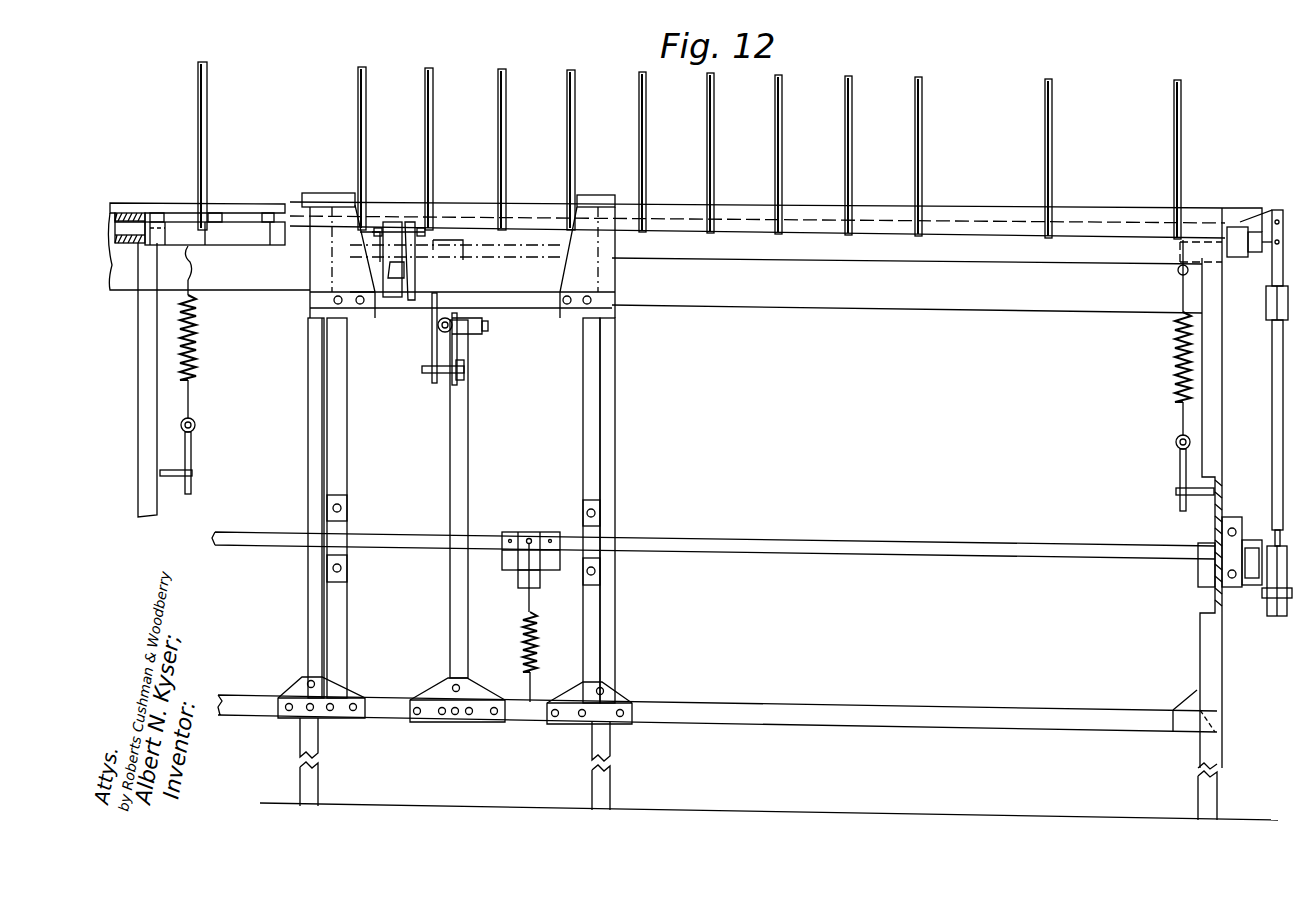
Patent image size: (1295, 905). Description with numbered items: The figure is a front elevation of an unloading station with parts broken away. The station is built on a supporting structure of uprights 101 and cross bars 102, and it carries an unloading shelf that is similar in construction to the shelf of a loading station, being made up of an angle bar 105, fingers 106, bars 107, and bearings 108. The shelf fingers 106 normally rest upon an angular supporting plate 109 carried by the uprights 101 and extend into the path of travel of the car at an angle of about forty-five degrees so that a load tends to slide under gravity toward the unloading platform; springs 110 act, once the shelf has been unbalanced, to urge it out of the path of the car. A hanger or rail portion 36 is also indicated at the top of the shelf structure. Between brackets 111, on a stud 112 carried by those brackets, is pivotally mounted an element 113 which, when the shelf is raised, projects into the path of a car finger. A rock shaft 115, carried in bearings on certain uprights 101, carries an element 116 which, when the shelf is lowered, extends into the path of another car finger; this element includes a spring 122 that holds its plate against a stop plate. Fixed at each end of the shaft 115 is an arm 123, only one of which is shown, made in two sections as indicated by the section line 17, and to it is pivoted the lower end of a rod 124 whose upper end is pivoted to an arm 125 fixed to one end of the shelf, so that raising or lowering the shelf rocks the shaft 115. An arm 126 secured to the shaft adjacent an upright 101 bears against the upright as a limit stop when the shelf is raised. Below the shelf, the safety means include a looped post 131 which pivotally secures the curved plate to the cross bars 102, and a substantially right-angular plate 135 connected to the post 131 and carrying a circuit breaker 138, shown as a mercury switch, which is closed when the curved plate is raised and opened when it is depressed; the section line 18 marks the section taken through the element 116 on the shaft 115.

The section line 17 is at (1257, 486).
The section line 18 is at (492, 498).
The rail 36 is at (527, 212).
The uprights 101 is at (148, 378).
The cross bars 102 is at (838, 707).
The angle bar 105 is at (232, 207).
The fingers 106 is at (432, 129).
The bars 107 is at (215, 251).
The bearings 108 is at (130, 215).
The angular supporting plate 109 is at (1080, 218).
The springs 110 is at (197, 374).
The brackets 111 is at (430, 258).
The stud 112 is at (410, 224).
The element 113 is at (392, 280).
The rock shaft 115 is at (848, 542).
The element 116 is at (546, 578).
The spring 122 is at (524, 653).
The arm 123 is at (1250, 571).
The rod 124 is at (1280, 406).
The arm 125 is at (1275, 270).
The arm 126 is at (1204, 592).
The looped post 131 is at (431, 346).
The plate 135 is at (454, 374).
The circuit breaker 138 is at (453, 333).